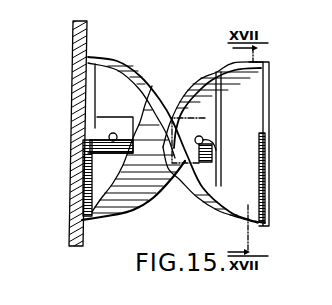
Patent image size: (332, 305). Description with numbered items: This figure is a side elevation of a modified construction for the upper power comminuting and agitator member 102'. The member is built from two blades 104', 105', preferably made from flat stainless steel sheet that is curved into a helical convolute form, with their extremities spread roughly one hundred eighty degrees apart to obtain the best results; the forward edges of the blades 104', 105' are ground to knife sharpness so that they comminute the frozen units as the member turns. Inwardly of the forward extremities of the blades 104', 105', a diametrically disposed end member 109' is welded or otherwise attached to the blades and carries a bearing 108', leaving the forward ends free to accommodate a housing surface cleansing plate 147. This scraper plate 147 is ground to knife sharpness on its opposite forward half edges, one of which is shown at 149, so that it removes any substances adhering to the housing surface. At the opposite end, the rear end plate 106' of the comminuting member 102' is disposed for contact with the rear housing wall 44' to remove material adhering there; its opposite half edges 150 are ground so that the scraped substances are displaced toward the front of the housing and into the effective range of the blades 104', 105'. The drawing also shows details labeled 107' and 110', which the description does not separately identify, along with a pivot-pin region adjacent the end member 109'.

The rear housing wall 44' is at (64, 135).
The upper comminuting member 102' is at (176, 132).
The blade 104' is at (128, 55).
The blade 105' is at (133, 179).
The rear end plate 106' is at (66, 84).
The right shell cap 107' is at (234, 105).
The bearing 108' is at (86, 124).
The end member 109' is at (228, 129).
The pivot pin 110' is at (146, 143).
The housing surface cleansing plate 147 is at (270, 108).
The sharpened forward half edge 149 is at (267, 170).
The ground half edges 150 is at (82, 177).